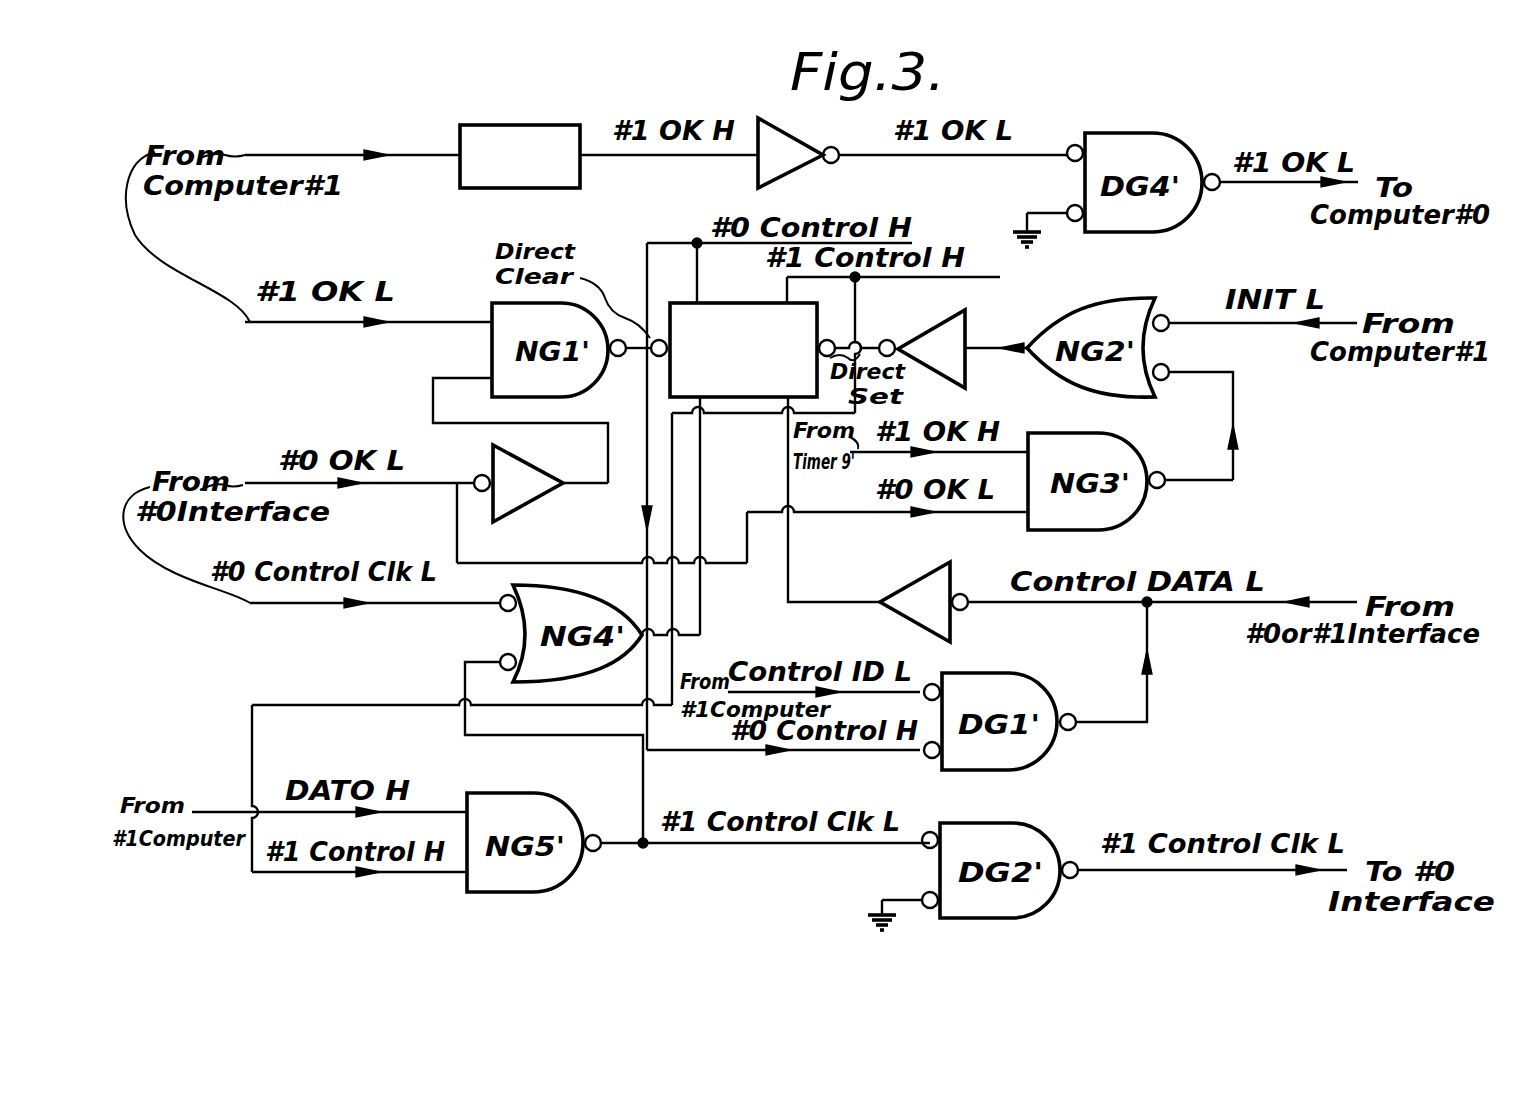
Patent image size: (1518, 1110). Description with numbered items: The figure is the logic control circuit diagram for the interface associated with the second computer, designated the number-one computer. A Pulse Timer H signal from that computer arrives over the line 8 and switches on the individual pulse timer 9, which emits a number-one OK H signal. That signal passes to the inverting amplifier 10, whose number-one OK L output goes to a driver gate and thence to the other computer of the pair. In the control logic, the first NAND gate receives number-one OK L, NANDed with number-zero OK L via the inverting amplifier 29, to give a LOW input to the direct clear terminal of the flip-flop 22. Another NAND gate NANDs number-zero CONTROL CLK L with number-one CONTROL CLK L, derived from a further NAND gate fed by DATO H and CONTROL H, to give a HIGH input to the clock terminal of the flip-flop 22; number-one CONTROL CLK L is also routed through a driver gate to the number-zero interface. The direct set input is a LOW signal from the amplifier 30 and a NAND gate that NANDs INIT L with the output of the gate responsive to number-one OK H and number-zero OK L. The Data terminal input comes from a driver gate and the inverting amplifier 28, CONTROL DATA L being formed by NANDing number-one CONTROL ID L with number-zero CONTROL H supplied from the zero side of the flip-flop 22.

The line 8 is at (445, 158).
The pulse timer 9 is at (545, 138).
The inverting amplifier 10 is at (782, 162).
The flip-flop 22 is at (741, 326).
The inverting amplifier 28 is at (929, 590).
The inverting amplifier 29 is at (526, 482).
The amplifier 30 is at (947, 340).